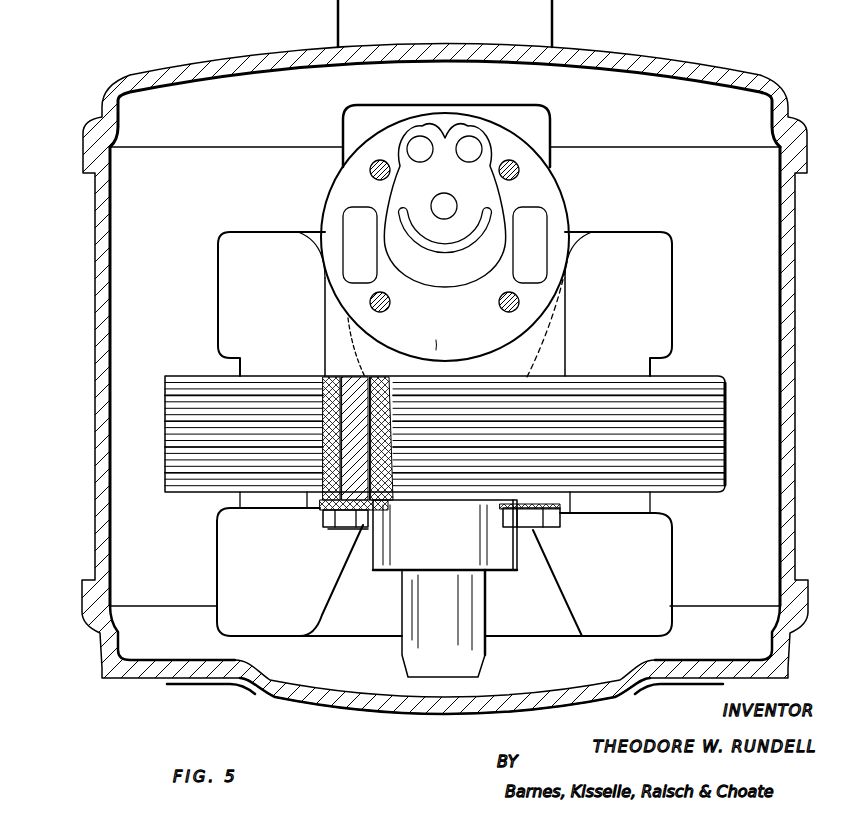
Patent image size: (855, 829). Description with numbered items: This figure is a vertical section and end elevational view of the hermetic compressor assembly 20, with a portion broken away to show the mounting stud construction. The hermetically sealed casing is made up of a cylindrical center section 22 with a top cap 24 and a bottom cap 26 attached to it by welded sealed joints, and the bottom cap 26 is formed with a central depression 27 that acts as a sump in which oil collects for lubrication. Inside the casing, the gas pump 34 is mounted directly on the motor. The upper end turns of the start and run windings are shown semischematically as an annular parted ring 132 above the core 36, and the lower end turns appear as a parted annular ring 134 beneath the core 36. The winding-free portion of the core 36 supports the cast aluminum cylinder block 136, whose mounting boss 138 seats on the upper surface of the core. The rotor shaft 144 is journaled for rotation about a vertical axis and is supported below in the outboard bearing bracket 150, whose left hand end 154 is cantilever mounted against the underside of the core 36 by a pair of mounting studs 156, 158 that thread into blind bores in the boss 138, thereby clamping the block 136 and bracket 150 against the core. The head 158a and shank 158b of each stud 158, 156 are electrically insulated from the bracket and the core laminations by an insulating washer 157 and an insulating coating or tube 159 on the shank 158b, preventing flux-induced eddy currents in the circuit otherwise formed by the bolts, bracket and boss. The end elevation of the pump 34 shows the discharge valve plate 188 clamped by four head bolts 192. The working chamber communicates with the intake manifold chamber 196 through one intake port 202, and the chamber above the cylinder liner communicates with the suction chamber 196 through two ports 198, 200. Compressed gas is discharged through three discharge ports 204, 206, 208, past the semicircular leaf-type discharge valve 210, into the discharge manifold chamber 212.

The hermetic compressor assembly 20 is at (83, 93).
The cylindrical center section 22 is at (92, 372).
The top cap 24 is at (181, 62).
The bottom cap 26 is at (100, 638).
The central depression 27 is at (402, 717).
The gas pump 34 is at (572, 186).
The core 36 is at (727, 405).
The annular parted ring 132 is at (217, 277).
The parted annular ring 134 is at (217, 576).
The cylinder block 136 is at (573, 293).
The mounting boss 138 is at (570, 330).
The rotor shaft 144 is at (487, 647).
The outboard bearing bracket 150 is at (518, 555).
The left hand end of bracket 154 is at (453, 503).
The mounting stud 156 is at (567, 524).
The insulating washer 157 is at (388, 510).
The mounting stud 158 is at (330, 528).
The head 158a is at (337, 532).
The shank 158b is at (348, 450).
The insulating coating or tube 159 is at (358, 378).
The discharge valve plate 188 is at (333, 184).
The head bolts 192 is at (516, 176).
The intake manifold chamber 196 is at (405, 180).
The port 198 is at (420, 137).
The port 200 is at (469, 137).
The intake port 202 is at (455, 187).
The discharge port 204 is at (402, 270).
The discharge port 206 is at (443, 281).
The discharge port 208 is at (490, 272).
The discharge valve 210 is at (388, 238).
The discharge manifold chamber 212 is at (436, 340).